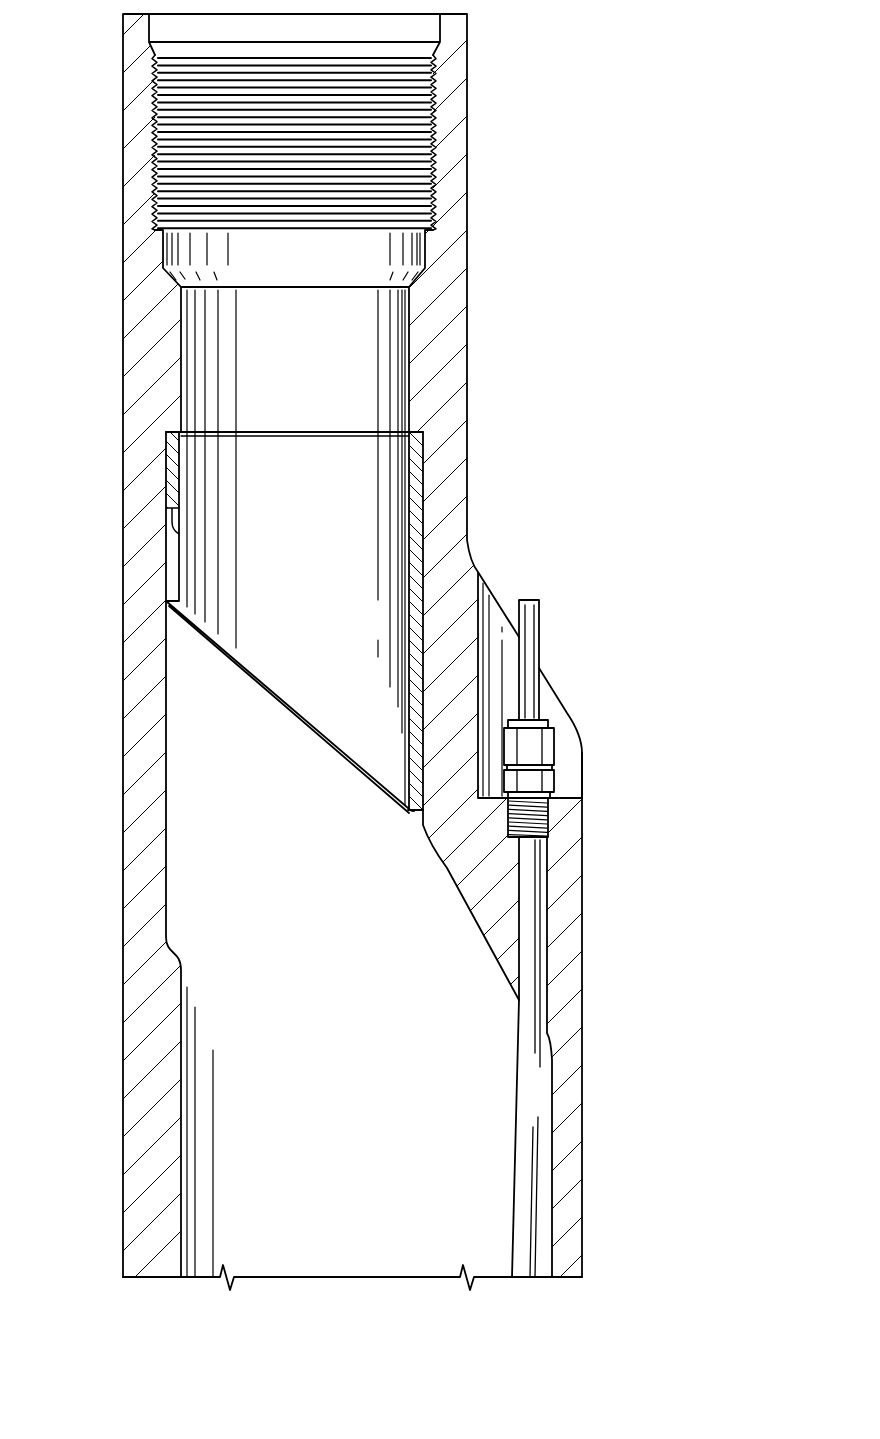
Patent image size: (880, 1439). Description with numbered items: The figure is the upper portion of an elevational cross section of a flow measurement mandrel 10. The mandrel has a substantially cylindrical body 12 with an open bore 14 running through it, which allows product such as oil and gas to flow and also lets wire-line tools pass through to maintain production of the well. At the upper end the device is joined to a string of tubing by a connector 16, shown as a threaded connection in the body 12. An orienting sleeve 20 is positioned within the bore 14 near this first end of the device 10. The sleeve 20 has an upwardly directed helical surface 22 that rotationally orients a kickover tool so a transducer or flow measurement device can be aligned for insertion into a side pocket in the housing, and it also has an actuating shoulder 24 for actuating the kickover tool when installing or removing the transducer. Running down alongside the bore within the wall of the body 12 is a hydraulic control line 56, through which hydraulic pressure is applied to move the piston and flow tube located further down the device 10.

The flow measurement mandrel 10 is at (640, 980).
The cylindrical body 12 is at (440, 719).
The open bore 14 is at (353, 1068).
The connector 16 is at (403, 163).
The orienting sleeve 20 is at (440, 719).
The upwardly directed helical surface 22 is at (217, 637).
The actuating shoulder 24 is at (172, 512).
The hydraulic control line 56 is at (528, 895).